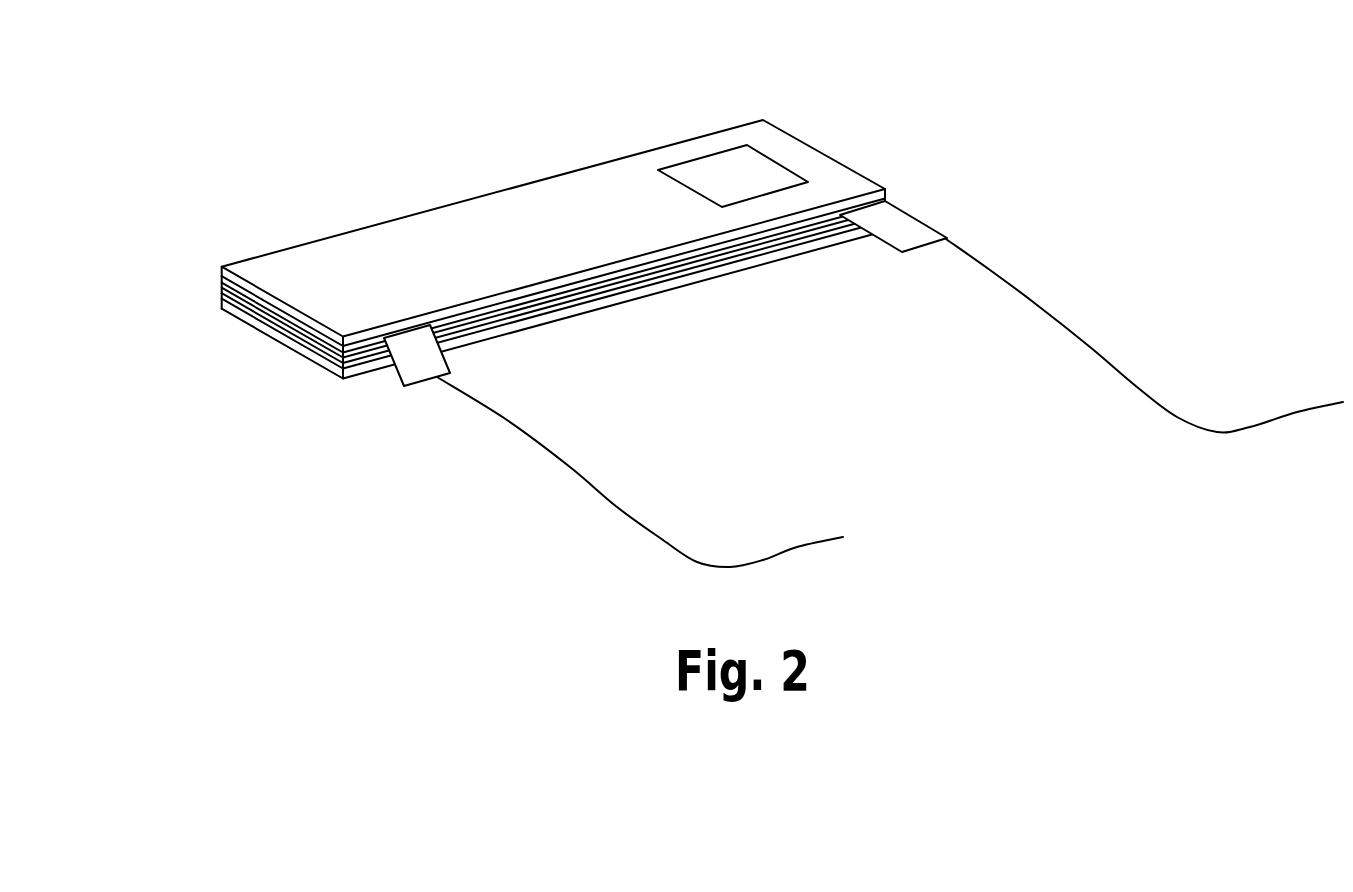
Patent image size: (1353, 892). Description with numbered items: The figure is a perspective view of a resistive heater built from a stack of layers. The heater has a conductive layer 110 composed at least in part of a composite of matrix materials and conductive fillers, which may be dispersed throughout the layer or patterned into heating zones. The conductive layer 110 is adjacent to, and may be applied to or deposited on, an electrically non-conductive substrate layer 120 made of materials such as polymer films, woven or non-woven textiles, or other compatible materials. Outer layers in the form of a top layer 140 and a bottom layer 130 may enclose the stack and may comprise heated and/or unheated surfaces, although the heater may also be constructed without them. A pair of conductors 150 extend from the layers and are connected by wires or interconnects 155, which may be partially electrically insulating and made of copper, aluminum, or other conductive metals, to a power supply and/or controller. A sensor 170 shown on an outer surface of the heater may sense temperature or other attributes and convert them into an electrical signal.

The conductive layer 110 is at (221, 288).
The substrate layer 120 is at (232, 311).
The bottom layer 130 is at (296, 351).
The top layer 140 is at (527, 185).
The conductors 150 is at (386, 377).
The interconnects 155 is at (617, 512).
The sensor 170 is at (778, 162).